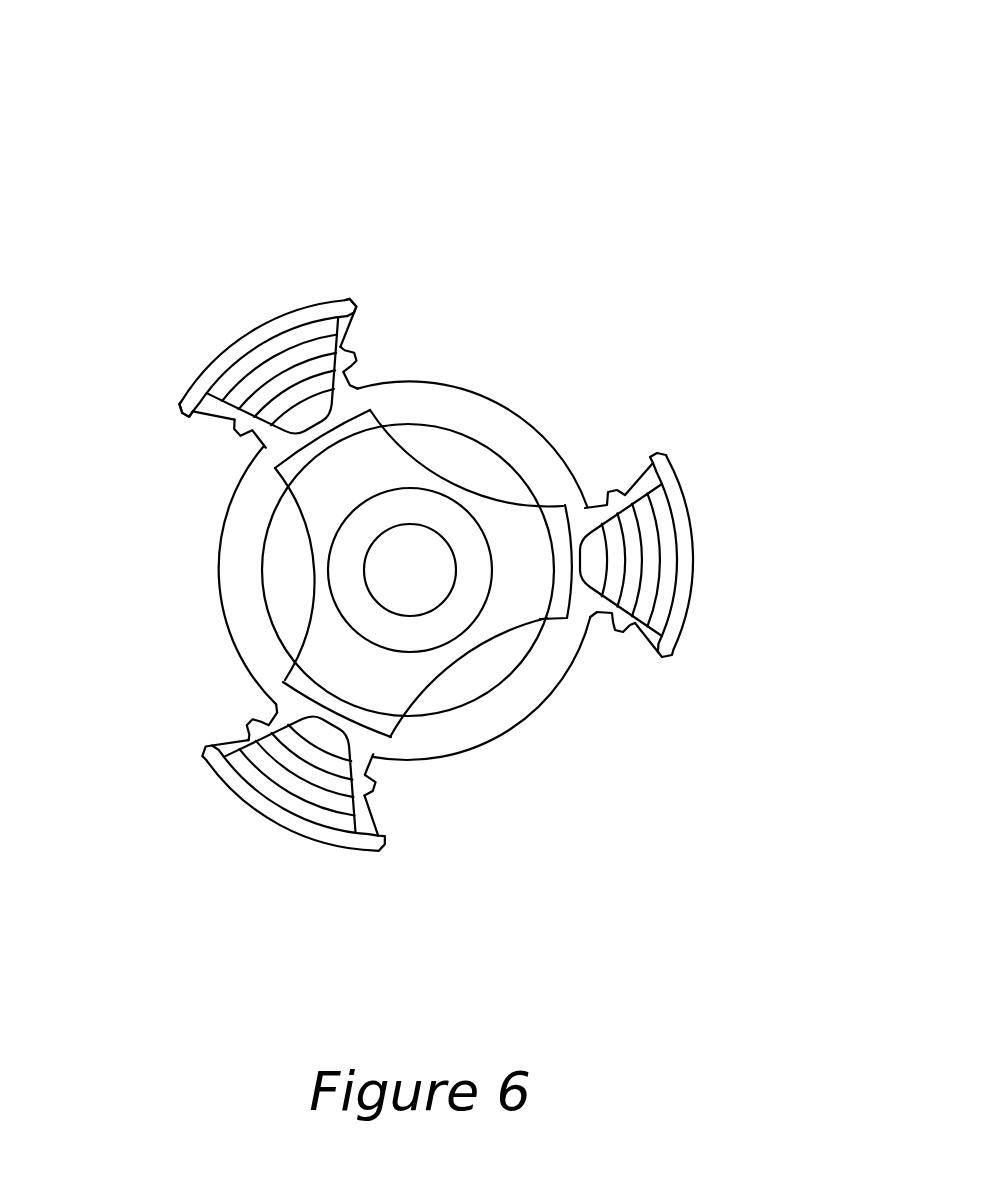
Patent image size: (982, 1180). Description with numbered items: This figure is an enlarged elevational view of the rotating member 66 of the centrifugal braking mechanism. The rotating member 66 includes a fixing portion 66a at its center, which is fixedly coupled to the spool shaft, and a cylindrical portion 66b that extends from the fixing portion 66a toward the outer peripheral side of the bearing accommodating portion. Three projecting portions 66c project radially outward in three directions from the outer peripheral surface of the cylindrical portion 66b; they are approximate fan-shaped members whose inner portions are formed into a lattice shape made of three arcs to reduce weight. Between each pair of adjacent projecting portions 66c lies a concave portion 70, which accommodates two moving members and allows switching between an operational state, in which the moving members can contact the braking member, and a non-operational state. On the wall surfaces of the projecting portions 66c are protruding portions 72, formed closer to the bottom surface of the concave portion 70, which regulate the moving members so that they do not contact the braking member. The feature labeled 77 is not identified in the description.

The rotating member 66 is at (460, 157).
The fixing portion 66a is at (353, 592).
The cylindrical portion 66b is at (315, 500).
The projecting portion 66c is at (258, 342).
The concave portion 70 is at (530, 380).
The protruding portion 72 is at (354, 357).
The hook 77 is at (365, 303).